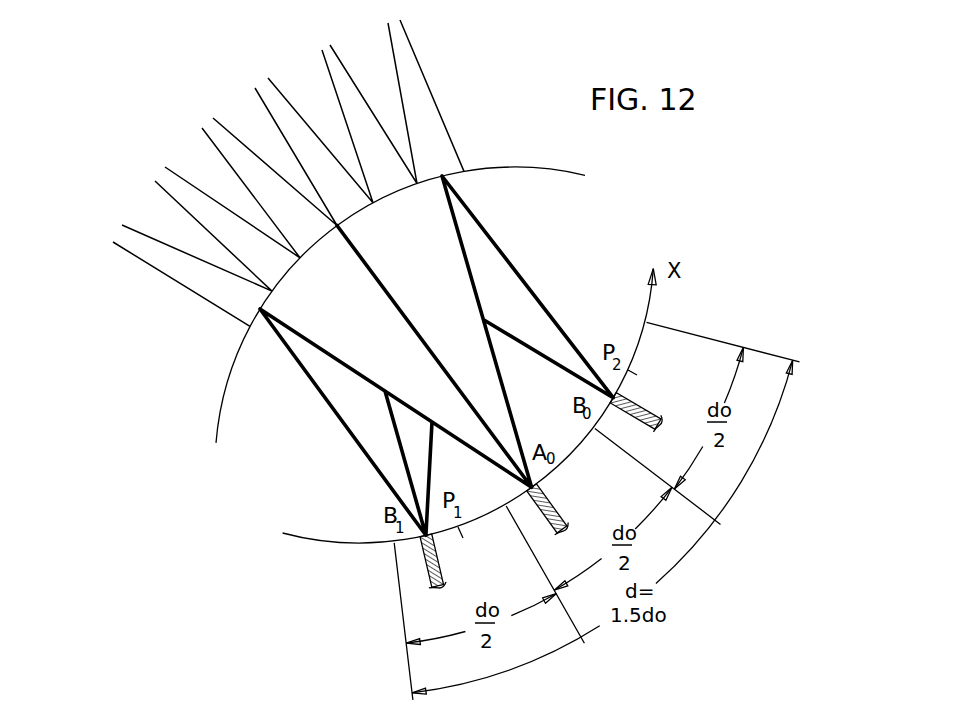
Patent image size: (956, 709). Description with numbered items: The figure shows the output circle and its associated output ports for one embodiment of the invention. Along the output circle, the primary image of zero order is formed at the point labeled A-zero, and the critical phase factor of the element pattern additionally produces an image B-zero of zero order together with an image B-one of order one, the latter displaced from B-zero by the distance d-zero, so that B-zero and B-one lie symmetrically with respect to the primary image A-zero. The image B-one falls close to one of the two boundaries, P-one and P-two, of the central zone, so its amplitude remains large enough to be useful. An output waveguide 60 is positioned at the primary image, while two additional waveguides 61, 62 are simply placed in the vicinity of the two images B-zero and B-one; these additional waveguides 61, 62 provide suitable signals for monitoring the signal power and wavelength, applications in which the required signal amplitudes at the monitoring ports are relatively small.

The optical fiber at point A0 60 is at (558, 506).
The additional waveguide 61 is at (652, 410).
The additional waveguide 62 is at (445, 569).